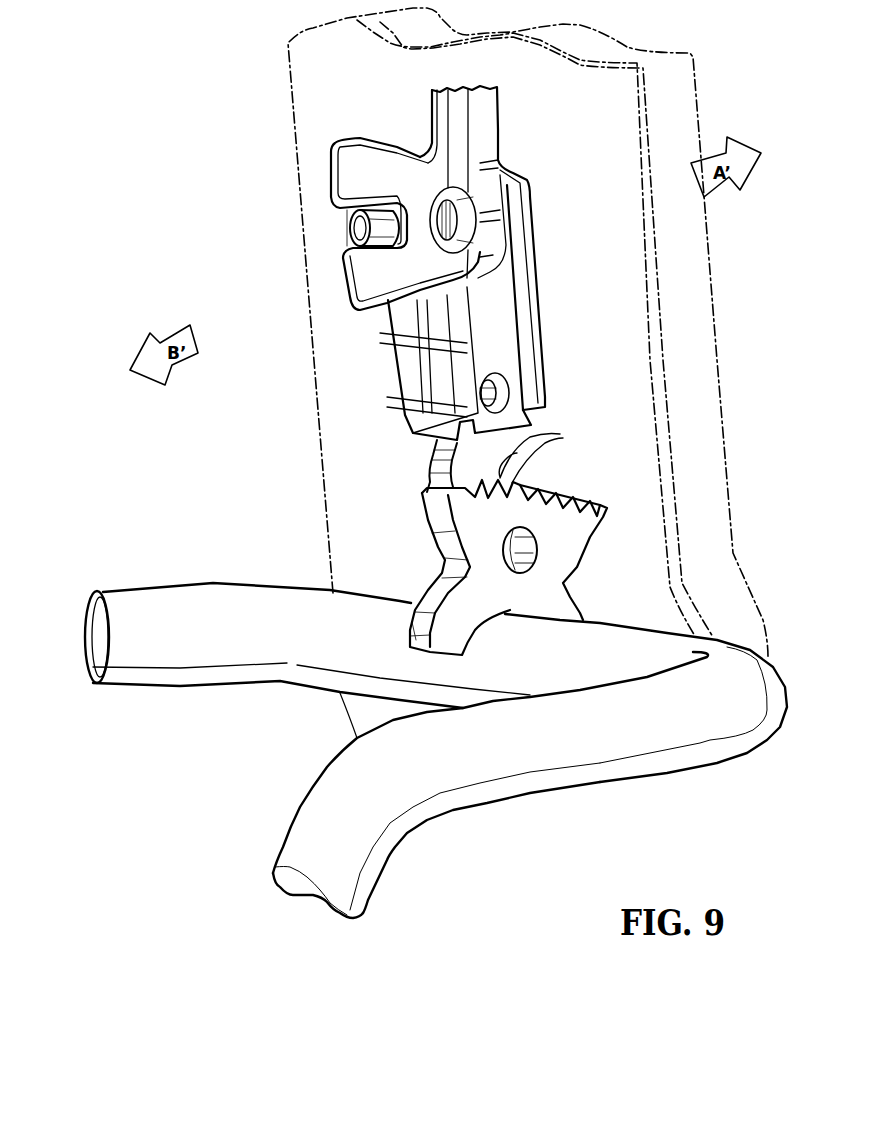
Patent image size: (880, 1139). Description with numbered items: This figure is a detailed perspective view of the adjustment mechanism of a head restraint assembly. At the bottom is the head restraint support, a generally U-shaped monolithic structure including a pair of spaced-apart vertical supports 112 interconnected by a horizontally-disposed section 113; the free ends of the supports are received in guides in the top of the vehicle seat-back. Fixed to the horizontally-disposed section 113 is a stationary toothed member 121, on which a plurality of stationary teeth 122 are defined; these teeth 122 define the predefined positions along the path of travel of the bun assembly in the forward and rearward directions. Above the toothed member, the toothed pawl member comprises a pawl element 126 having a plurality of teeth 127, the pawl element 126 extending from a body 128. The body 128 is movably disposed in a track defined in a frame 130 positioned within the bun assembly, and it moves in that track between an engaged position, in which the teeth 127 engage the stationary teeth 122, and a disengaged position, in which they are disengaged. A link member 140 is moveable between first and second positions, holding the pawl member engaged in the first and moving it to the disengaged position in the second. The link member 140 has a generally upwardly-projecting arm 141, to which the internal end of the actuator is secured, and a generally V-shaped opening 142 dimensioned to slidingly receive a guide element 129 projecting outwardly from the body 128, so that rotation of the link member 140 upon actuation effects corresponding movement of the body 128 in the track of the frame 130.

The vertical support 112 is at (367, 900).
The horizontally-disposed section 113 is at (653, 642).
The stationary toothed member 121 is at (413, 622).
The stationary teeth 122 is at (530, 482).
The pawl element 126 is at (430, 472).
The teeth 127 is at (565, 434).
The body 128 is at (508, 332).
The guide element 129 is at (373, 207).
The frame 130 is at (655, 333).
The link member 140 is at (325, 139).
The arm 141 is at (453, 107).
The V-shaped opening 142 is at (338, 232).